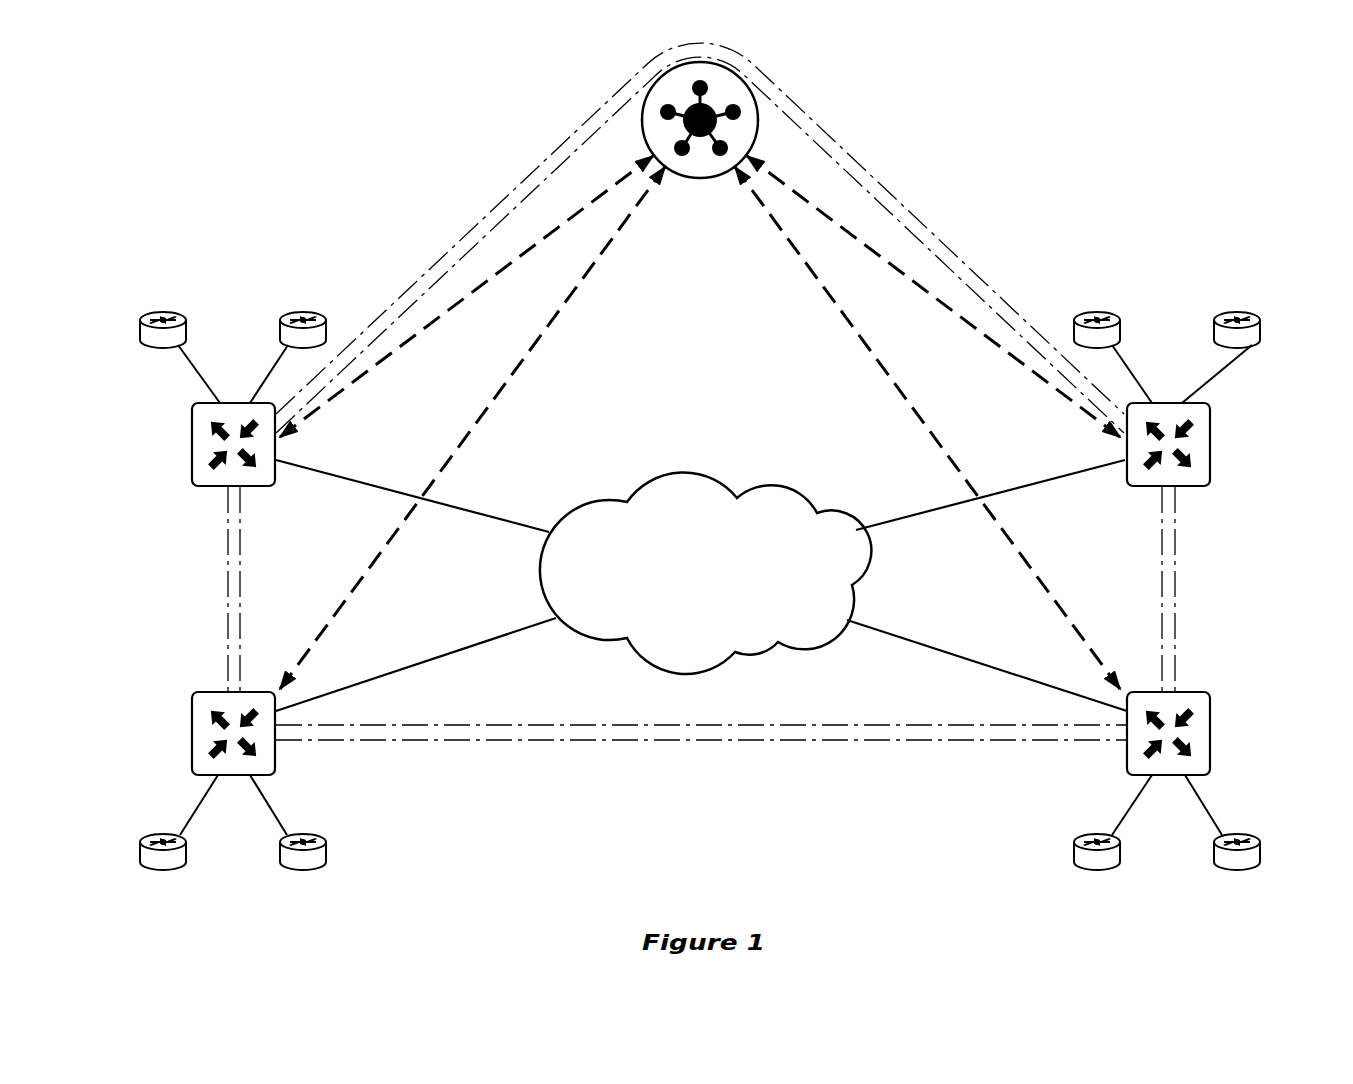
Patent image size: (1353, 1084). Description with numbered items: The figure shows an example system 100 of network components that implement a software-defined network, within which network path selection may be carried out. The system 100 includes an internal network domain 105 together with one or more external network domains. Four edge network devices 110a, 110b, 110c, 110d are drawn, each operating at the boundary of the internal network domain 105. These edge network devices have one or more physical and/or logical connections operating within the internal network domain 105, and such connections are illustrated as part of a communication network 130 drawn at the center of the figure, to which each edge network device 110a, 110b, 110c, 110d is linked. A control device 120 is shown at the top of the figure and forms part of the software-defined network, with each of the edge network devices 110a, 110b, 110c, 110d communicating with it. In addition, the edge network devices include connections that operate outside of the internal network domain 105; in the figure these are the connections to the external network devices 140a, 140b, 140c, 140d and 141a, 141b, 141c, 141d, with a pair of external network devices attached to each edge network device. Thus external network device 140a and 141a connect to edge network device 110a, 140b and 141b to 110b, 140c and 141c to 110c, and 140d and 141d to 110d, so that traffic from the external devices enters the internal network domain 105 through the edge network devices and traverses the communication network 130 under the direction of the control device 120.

The system 100 is at (1215, 112).
The internal network domain 105 is at (923, 223).
The edge network device 110a is at (192, 444).
The edge network device 110b is at (192, 733).
The edge network device 110c is at (1210, 444).
The edge network device 110d is at (1210, 733).
The control device 120 is at (757, 116).
The communication network 130 is at (717, 584).
The external network device 140a is at (163, 312).
The external network device 140b is at (163, 864).
The external network device 140c is at (1097, 312).
The external network device 140d is at (1097, 864).
The external network device 141a is at (303, 312).
The external network device 141b is at (303, 864).
The external network device 141c is at (1237, 312).
The external network device 141d is at (1237, 864).